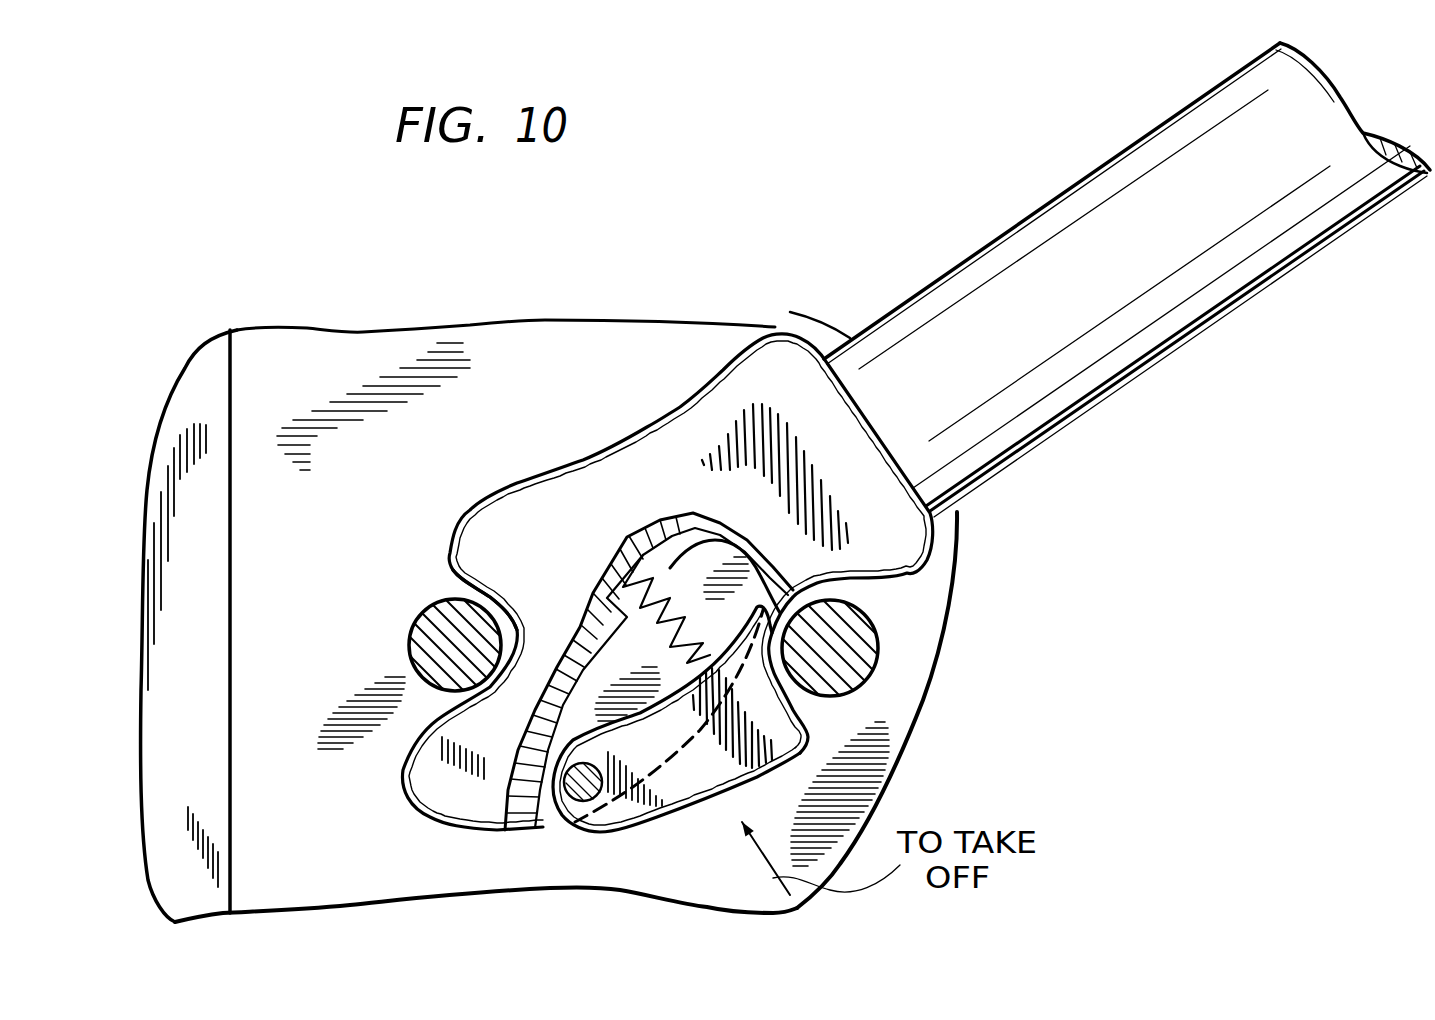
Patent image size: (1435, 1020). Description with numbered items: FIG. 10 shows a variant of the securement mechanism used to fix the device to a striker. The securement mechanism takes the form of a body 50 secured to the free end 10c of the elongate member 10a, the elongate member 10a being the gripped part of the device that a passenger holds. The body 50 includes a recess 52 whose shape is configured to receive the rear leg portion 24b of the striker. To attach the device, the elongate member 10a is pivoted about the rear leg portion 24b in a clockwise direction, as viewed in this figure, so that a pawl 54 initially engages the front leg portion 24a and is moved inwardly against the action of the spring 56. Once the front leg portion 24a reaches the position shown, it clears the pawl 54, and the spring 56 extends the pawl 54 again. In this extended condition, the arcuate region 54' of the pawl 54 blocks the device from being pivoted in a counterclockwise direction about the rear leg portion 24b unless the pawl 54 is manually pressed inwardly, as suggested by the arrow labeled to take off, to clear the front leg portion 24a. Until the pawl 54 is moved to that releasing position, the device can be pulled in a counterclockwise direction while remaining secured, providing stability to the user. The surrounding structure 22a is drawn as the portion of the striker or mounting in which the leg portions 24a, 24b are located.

The elongate member 10a is at (1252, 334).
The free end of the elongate member 10c is at (1062, 398).
The housing body 22a is at (230, 817).
The front leg portion 24a is at (878, 648).
The rear leg portion 24b is at (437, 645).
The body 50 is at (693, 392).
The recess 52 is at (455, 575).
The pawl 54 is at (768, 686).
The arcuate region 54' is at (782, 716).
The spring 56 is at (670, 575).